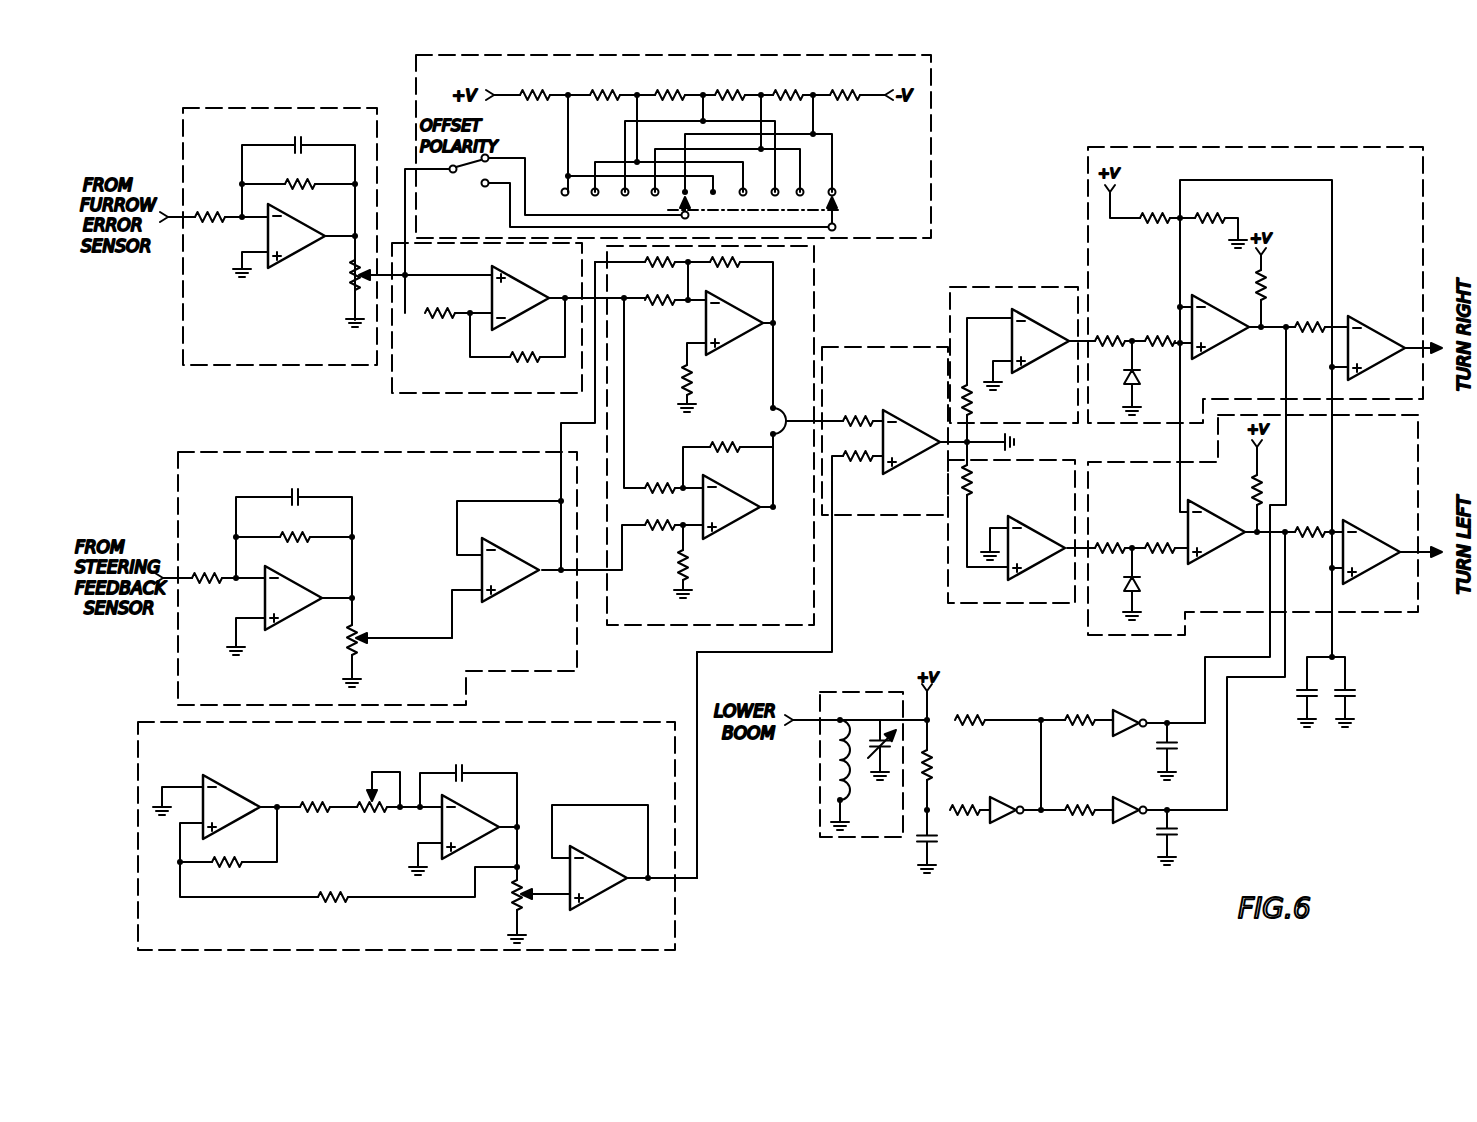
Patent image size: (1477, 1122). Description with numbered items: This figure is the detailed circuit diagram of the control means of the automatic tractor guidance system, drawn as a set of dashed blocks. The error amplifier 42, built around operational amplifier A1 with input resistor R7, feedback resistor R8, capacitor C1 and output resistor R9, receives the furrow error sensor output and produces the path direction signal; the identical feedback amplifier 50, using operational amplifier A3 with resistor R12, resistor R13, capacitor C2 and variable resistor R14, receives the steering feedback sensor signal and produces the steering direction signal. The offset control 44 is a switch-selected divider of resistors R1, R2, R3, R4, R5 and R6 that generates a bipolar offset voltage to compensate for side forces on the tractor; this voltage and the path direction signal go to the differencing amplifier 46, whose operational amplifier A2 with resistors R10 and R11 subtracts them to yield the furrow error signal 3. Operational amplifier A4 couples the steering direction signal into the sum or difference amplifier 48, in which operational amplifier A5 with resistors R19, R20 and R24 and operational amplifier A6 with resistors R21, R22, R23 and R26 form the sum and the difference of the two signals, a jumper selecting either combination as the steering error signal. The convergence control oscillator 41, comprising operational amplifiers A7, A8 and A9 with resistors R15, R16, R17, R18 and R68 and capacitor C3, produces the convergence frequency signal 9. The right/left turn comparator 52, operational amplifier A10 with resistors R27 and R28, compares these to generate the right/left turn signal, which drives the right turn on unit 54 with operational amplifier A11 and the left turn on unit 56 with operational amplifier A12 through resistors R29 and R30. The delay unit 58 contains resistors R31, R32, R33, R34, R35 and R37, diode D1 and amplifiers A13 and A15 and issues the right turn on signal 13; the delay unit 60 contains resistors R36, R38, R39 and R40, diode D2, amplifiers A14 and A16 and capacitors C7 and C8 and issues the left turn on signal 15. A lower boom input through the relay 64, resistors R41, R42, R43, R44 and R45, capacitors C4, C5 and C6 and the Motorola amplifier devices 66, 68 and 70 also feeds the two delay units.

The furrow error signal 3 is at (595, 275).
The convergence frequency signal 9 is at (697, 843).
The right turn on output signal 13 is at (1422, 335).
The left turn on output signal 15 is at (1408, 557).
The convergence control oscillator 41 is at (677, 936).
The error amplifier 42 is at (178, 311).
The offset control 44 is at (931, 128).
The differencing amplifier 46 is at (439, 394).
The sum or difference amplifier 48 is at (814, 298).
The feedback amplifier 50 is at (178, 480).
The right/left turn comparator 52 is at (882, 346).
The right turn on unit 54 is at (1018, 264).
The left turn on unit 56 is at (947, 571).
The delay unit 58 is at (1307, 146).
The delay unit 60 is at (1403, 612).
The relay 64 is at (843, 838).
The amplifier 66 is at (1001, 826).
The amplifier 68 is at (1128, 718).
The amplifier 70 is at (1122, 826).
The resistor R1 is at (535, 85).
The resistor R2 is at (605, 85).
The resistor R3 is at (670, 85).
The resistor R4 is at (730, 85).
The resistor R5 is at (788, 85).
The resistor R6 is at (845, 85).
The resistor R7 is at (210, 207).
The resistor R8 is at (303, 175).
The resistor R9 is at (362, 275).
The resistor R10 is at (439, 302).
The resistor R11 is at (525, 368).
The resistor R12 is at (207, 568).
The resistor R13 is at (300, 548).
The variable resistor R14 is at (382, 640).
The resistor R15 is at (225, 874).
The resistor R16 is at (315, 797).
The variable resistor R17 is at (378, 804).
The variable resistor R18 is at (523, 895).
The resistor R19 is at (660, 274).
The resistor R20 is at (660, 312).
The resistor R21 is at (656, 476).
The resistor R22 is at (656, 540).
The resistor R23 is at (704, 566).
The resistor R24 is at (725, 274).
The resistor R26 is at (712, 408).
The resistor R27 is at (858, 409).
The resistor R28 is at (855, 469).
The resistor R29 is at (986, 400).
The resistor R30 is at (987, 481).
The resistor R31 is at (1109, 330).
The resistor R32 is at (1160, 330).
The resistor R33 is at (1155, 207).
The resistor R34 is at (1206, 231).
The resistor R35 is at (1278, 285).
The resistor R36 is at (1239, 490).
The resistor R37 is at (1309, 317).
The resistor R38 is at (1309, 521).
The resistor R39 is at (1108, 538).
The resistor R40 is at (1159, 538).
The resistor R41 is at (947, 765).
The resistor R42 is at (969, 709).
The resistor R43 is at (966, 799).
The resistor R44 is at (1079, 709).
The resistor R45 is at (1079, 799).
The resistor R68 is at (331, 887).
The capacitor C1 is at (300, 135).
The capacitor C2 is at (298, 486).
The capacitor C3 is at (461, 763).
The capacitor C4 is at (939, 849).
The capacitor C5 is at (1178, 749).
The capacitor C6 is at (1178, 836).
The capacitor C7 is at (1296, 696).
The capacitor C8 is at (1355, 696).
The diode D1 is at (1119, 381).
The diode D2 is at (1118, 587).
The operational amplifier A1 is at (283, 268).
The operational amplifier A2 is at (523, 296).
The operational amplifier A3 is at (282, 635).
The operational amplifier A4 is at (512, 605).
The operational amplifier A5 is at (735, 322).
The operational amplifier A6 is at (732, 516).
The operational amplifier A7 is at (232, 782).
The operational amplifier A8 is at (475, 814).
The operational amplifier A9 is at (618, 905).
The operational amplifier A10 is at (896, 476).
The operational amplifier A11 is at (1038, 372).
The operational amplifier A12 is at (1033, 530).
The amplifier A13 is at (1222, 352).
The amplifier A14 is at (1218, 560).
The amplifier A15 is at (1372, 327).
The amplifier A16 is at (1370, 532).